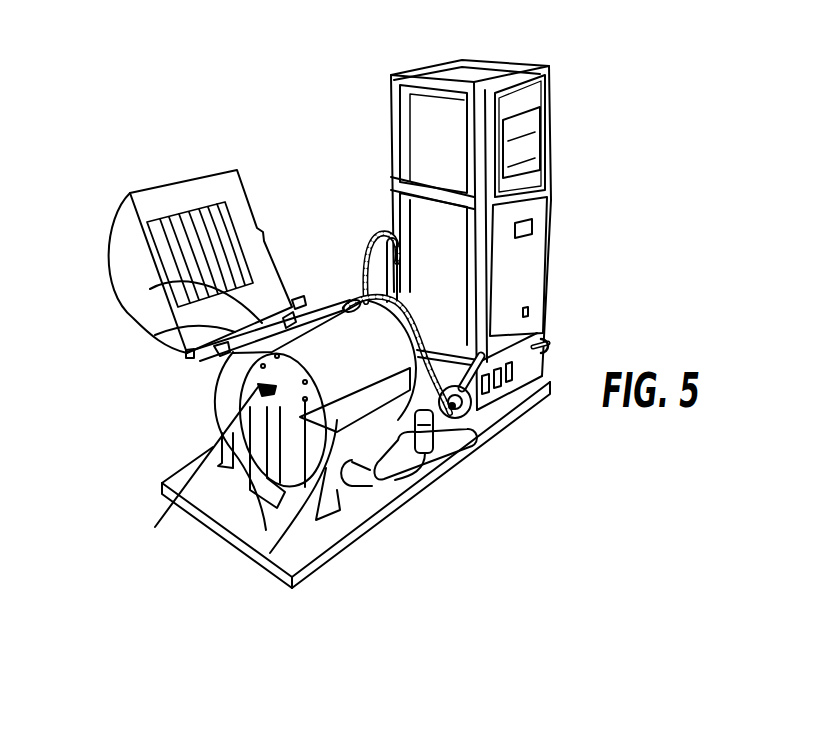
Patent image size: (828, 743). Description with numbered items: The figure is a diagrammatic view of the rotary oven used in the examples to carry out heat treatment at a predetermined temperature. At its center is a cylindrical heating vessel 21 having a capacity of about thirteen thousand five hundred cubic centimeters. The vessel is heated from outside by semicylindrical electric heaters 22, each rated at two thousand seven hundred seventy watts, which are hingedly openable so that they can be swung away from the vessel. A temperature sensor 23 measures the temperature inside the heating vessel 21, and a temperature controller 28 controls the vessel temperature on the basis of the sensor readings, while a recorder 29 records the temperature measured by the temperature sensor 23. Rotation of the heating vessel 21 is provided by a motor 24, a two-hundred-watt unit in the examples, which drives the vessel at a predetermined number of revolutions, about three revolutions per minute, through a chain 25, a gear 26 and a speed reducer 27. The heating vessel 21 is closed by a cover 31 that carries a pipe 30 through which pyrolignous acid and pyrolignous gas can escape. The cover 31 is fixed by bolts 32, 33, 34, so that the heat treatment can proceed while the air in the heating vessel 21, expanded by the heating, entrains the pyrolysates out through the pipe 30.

The cylindrical heating vessel 21 is at (337, 357).
The semicylindrical electric heaters 22 is at (182, 205).
The temperature sensor 23 is at (190, 462).
The motor 24 is at (395, 242).
The chain 25 is at (483, 420).
The gear 26 is at (380, 306).
The speed reducer 27 is at (360, 298).
The temperature controller 28 is at (527, 232).
The temperature recorder 29 is at (527, 146).
The pipe 30 is at (222, 462).
The cover 31 is at (233, 393).
The bolt 32 is at (160, 342).
The bolt 33 is at (185, 290).
The bolt 34 is at (265, 555).